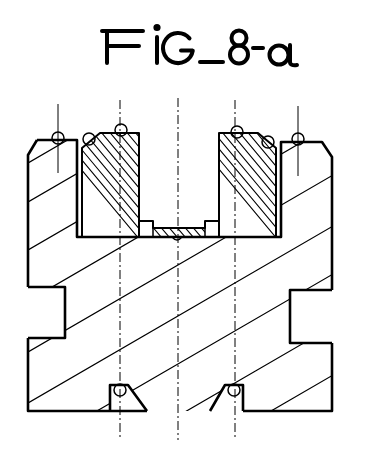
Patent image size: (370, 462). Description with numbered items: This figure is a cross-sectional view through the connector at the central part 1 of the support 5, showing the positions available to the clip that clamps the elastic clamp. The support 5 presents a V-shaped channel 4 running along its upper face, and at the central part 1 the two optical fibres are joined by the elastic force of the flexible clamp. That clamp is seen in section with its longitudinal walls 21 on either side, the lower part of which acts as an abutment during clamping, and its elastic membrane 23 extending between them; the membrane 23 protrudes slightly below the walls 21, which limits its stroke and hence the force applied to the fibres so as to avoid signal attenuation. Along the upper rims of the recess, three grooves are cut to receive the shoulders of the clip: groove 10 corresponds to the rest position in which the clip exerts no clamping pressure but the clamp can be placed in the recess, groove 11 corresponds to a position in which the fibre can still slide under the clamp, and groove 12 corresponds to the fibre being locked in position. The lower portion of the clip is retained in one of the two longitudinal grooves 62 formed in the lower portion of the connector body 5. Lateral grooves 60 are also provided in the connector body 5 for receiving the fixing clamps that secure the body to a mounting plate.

The central part 1 is at (47, 157).
The V-shaped channel 4 is at (176, 241).
The support 5 is at (152, 358).
The groove 10 is at (304, 134).
The groove 11 is at (271, 136).
The groove 12 is at (239, 126).
The longitudinal wall 21 is at (127, 126).
The elastic membrane 23 is at (164, 228).
The groove 60 is at (48, 311).
The longitudinal groove 62 is at (126, 397).